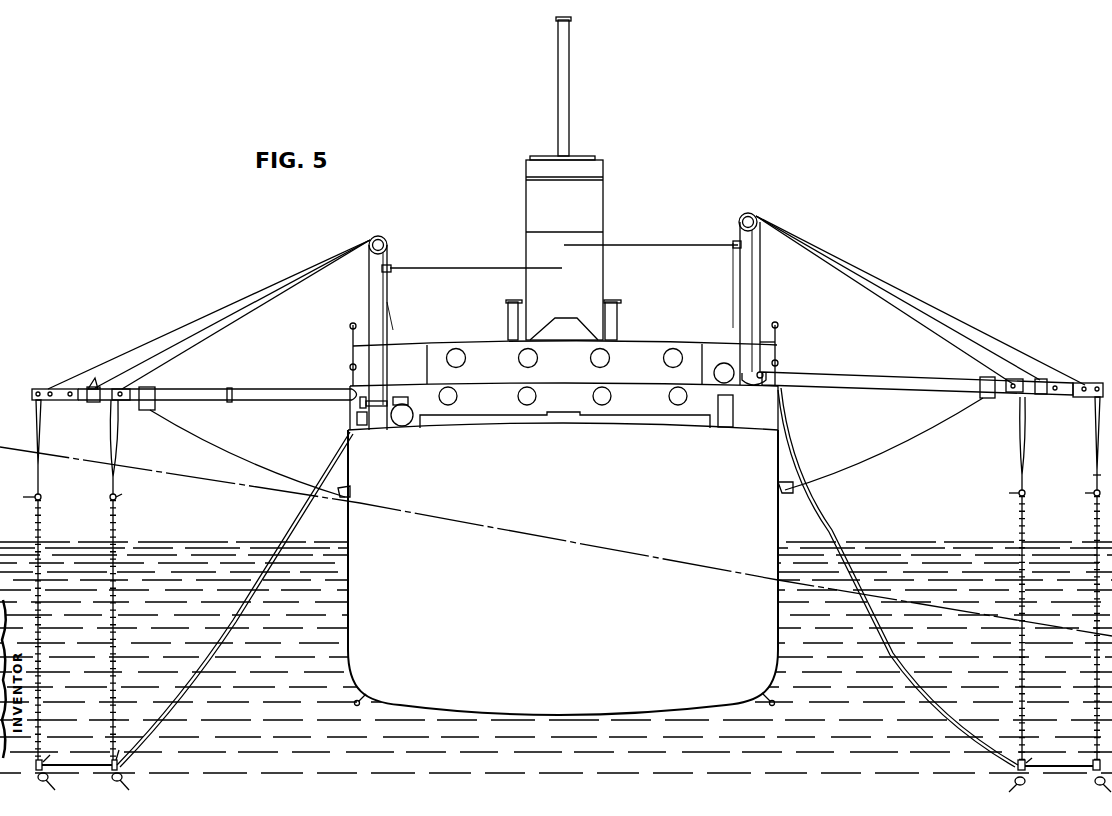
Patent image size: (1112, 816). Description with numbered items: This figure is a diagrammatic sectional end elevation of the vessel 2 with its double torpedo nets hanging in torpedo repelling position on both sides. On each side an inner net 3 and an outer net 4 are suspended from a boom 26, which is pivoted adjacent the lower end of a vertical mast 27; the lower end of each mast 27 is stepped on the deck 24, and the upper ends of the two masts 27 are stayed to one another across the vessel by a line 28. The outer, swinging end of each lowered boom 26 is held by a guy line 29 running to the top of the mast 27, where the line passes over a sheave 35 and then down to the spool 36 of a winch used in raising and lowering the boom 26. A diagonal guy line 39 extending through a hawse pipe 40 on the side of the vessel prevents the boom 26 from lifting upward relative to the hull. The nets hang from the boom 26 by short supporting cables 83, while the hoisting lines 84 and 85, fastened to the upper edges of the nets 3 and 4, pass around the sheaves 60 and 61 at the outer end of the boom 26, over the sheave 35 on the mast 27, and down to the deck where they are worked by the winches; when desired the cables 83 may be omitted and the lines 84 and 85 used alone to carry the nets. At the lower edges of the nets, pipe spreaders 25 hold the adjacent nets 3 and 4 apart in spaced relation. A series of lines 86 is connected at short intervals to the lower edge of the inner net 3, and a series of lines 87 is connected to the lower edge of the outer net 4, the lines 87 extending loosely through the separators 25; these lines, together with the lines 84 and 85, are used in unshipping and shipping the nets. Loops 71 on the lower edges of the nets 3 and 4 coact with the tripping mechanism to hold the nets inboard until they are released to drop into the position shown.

The ship or vessel 2 is at (563, 569).
The inner torpedo net 3 is at (116, 628).
The outer torpedo net 4 is at (40, 618).
The deck 24 is at (560, 346).
The spreader or separator 25 is at (1060, 777).
The boom 26 is at (213, 389).
The vertical mast 27 is at (378, 320).
The stay line 28 is at (475, 268).
The guy line 29 is at (151, 355).
The sheave 35 is at (386, 245).
The winch spool 36 is at (404, 426).
The diagonal guy line 39 is at (237, 456).
The hawse pipe 40 is at (341, 497).
The sheave 60 is at (45, 388).
The sheave 61 is at (132, 388).
The loop 71 is at (50, 780).
The supporting cable 83 is at (36, 418).
The hoisting line 84 is at (184, 352).
The hoisting line 85 is at (107, 364).
The lower-edge line 86 is at (181, 705).
The lower-edge line 87 is at (197, 680).